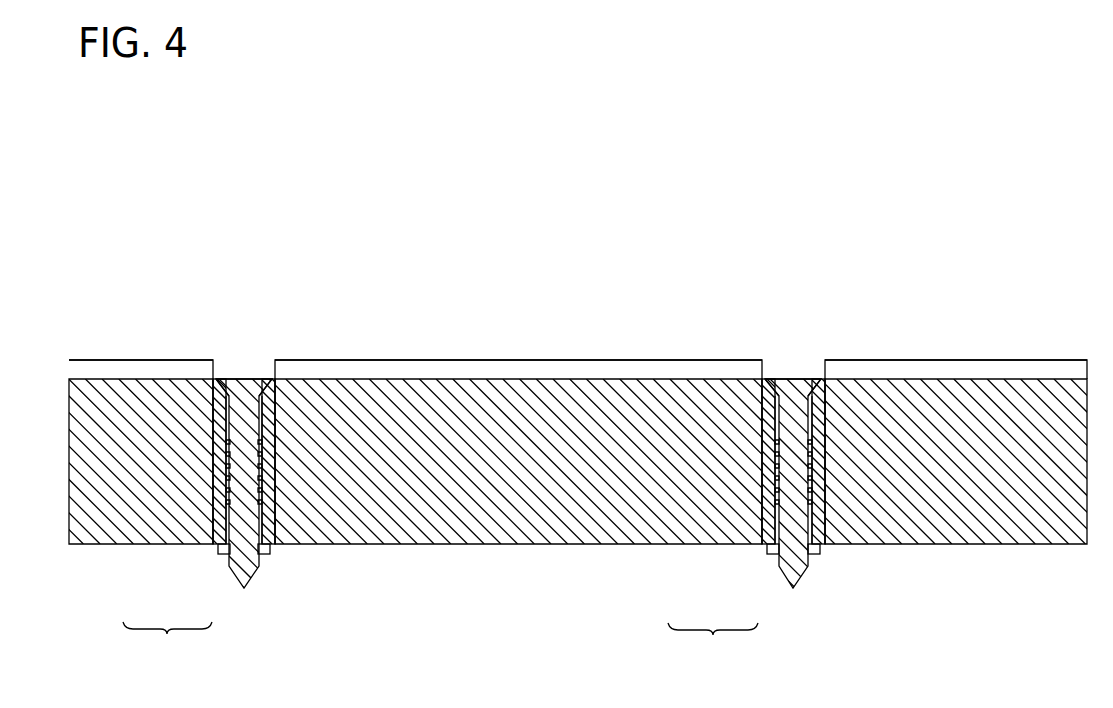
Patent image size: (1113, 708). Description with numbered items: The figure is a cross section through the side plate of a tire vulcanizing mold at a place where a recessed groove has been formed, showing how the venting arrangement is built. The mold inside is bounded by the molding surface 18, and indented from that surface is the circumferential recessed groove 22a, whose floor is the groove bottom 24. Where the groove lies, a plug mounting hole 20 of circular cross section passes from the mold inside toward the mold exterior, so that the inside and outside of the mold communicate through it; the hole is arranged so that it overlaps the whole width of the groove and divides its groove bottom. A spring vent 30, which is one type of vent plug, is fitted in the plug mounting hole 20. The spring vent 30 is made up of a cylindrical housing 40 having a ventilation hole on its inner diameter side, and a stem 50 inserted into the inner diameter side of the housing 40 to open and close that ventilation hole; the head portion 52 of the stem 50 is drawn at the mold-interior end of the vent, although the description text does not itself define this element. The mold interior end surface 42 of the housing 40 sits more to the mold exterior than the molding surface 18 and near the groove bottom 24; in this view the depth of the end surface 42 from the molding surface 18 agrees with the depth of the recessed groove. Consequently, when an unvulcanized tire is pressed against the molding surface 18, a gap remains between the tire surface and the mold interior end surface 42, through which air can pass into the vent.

The molding surface 18 is at (370, 360).
The plug mounting hole 20 is at (270, 550).
The circumferential recessed groove 22a is at (457, 368).
The groove bottom 24 is at (535, 380).
The spring vent 30 is at (440, 642).
The housing 40 is at (220, 550).
The mold interior end surface 42 is at (268, 381).
The stem 50 is at (240, 567).
The head portion of pin 52 is at (241, 378).